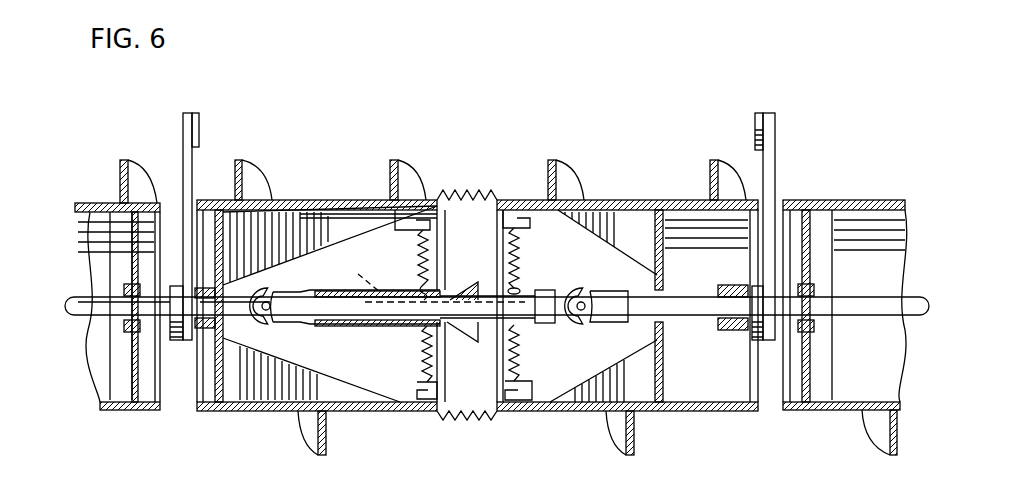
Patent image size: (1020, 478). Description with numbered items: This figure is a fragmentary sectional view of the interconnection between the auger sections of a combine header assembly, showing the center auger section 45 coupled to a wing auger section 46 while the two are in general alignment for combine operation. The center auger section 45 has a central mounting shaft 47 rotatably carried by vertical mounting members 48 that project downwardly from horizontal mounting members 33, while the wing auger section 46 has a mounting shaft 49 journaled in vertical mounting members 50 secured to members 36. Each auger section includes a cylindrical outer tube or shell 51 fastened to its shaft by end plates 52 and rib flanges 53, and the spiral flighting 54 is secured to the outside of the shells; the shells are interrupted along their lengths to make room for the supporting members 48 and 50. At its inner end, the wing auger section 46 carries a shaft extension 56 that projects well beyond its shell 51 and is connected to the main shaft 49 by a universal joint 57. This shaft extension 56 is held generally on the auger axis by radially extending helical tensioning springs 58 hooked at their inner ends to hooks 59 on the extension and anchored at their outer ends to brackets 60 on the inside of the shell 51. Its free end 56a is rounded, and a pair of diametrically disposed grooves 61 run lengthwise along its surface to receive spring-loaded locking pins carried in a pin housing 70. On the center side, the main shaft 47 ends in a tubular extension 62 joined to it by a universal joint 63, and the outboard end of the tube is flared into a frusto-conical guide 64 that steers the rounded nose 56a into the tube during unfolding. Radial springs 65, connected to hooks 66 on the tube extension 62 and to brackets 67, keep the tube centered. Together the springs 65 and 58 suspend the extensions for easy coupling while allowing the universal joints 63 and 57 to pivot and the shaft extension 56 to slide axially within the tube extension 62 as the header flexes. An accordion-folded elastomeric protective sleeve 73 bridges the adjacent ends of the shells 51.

The horizontal mounting member 33 is at (200, 133).
The member 36 is at (755, 126).
The center auger section 45 is at (320, 198).
The wing auger section 46 is at (645, 198).
The central mounting shaft 47 is at (76, 297).
The vertical mounting member 48 is at (182, 177).
The mounting shaft 49 is at (883, 310).
The vertical mounting member 50 is at (777, 162).
The cylindrical outer tube or shell 51 is at (258, 412).
The end plate 52 is at (136, 274).
The rib flange 53 is at (620, 238).
The spiral blades or flighting 54 is at (258, 183).
The shaft extension 56 is at (488, 292).
The free end or nose 56a is at (377, 329).
The universal joint 57 is at (572, 337).
The helical tensioning spring 58 is at (528, 372).
The hook 59 is at (523, 291).
The bracket 60 is at (532, 233).
The groove or keyway 61 is at (429, 282).
The tubular extension 62 is at (297, 326).
The universal joint 63 is at (268, 284).
The frusto-conical guide 64 is at (454, 290).
The radial spring 65 is at (418, 251).
The hook 66 is at (420, 284).
The bracket 67 is at (416, 226).
The pin housing 70 is at (448, 338).
The protective sleeve 73 is at (468, 422).